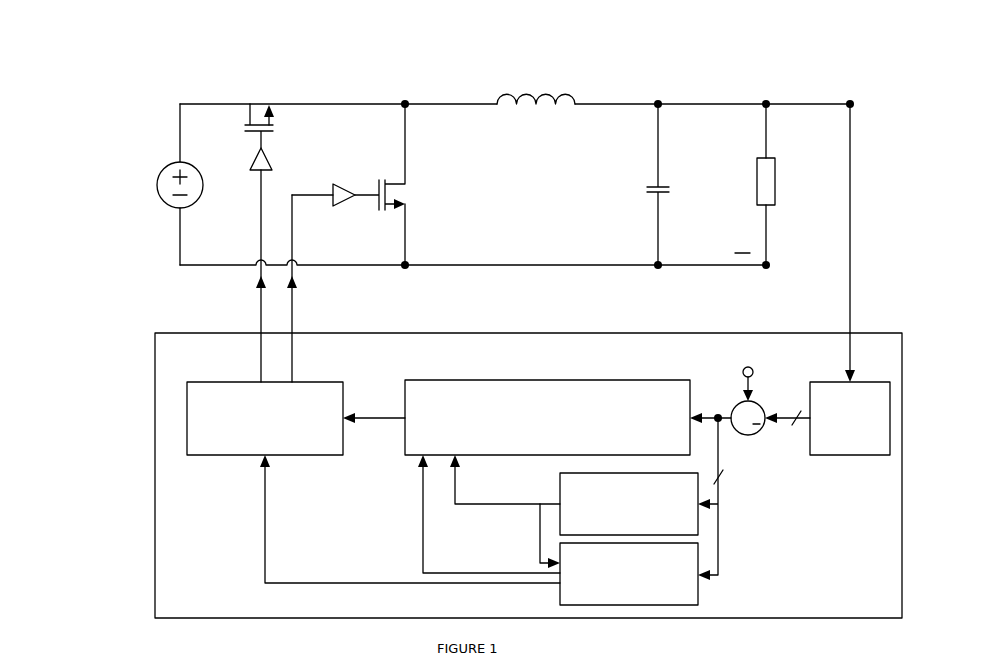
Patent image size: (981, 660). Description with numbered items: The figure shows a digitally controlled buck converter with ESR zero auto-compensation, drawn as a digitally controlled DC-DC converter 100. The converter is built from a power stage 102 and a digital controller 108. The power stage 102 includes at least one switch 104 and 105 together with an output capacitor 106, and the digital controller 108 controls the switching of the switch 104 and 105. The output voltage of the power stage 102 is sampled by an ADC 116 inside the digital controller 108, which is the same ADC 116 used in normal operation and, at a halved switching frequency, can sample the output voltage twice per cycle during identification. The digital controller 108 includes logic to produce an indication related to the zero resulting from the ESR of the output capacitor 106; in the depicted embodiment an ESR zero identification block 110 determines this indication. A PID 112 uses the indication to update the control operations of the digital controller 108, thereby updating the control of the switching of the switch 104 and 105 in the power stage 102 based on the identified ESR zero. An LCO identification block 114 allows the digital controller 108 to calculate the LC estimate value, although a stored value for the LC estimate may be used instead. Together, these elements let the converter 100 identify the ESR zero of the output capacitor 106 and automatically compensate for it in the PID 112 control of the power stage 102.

The digitally controlled DC-DC converter 100 is at (900, 66).
The power stage 102 is at (97, 141).
The switch 104 is at (275, 127).
The switch 105 is at (380, 180).
The output capacitor 106 is at (648, 192).
The digital controller 108 is at (165, 368).
The ESR zero identification block 110 is at (690, 587).
The PID 112 is at (455, 393).
The LCO identification block 114 is at (562, 486).
The ADC 116 is at (830, 388).